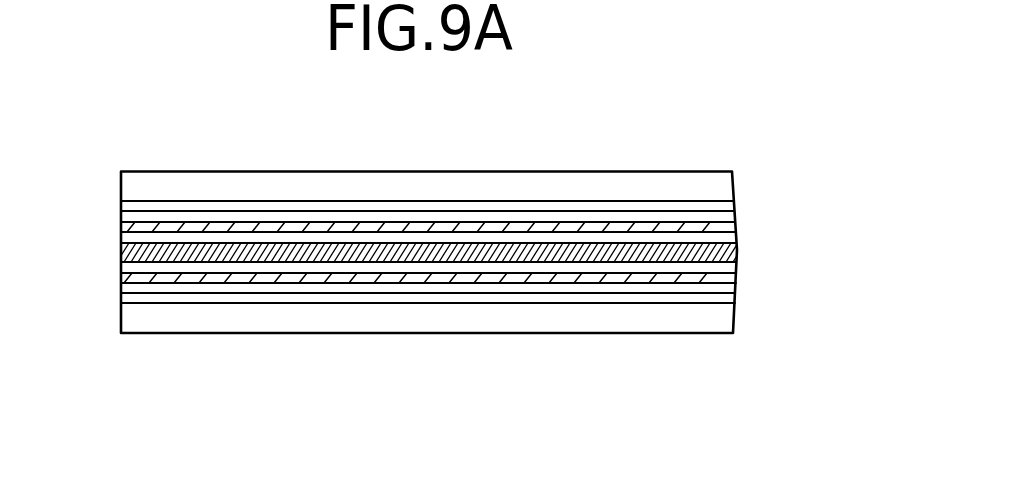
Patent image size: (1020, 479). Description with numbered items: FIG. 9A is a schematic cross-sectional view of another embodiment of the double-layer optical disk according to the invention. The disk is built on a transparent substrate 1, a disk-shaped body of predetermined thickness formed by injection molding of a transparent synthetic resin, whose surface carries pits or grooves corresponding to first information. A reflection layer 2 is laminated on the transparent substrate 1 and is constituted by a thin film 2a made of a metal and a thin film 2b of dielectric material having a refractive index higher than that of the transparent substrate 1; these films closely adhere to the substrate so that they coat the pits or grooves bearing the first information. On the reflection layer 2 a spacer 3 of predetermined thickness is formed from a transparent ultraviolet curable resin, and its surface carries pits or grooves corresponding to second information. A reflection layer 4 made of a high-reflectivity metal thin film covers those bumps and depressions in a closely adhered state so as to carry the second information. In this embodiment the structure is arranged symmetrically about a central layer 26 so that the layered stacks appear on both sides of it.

The transparent substrate 1 is at (709, 182).
The reflection layer 2 is at (503, 241).
The thin film made of a metal 2a is at (735, 205).
The thin film of dielectric material 2b is at (474, 243).
The spacer 3 is at (646, 225).
The reflection layer 4 is at (593, 237).
The adhesive layer 26 is at (121, 253).